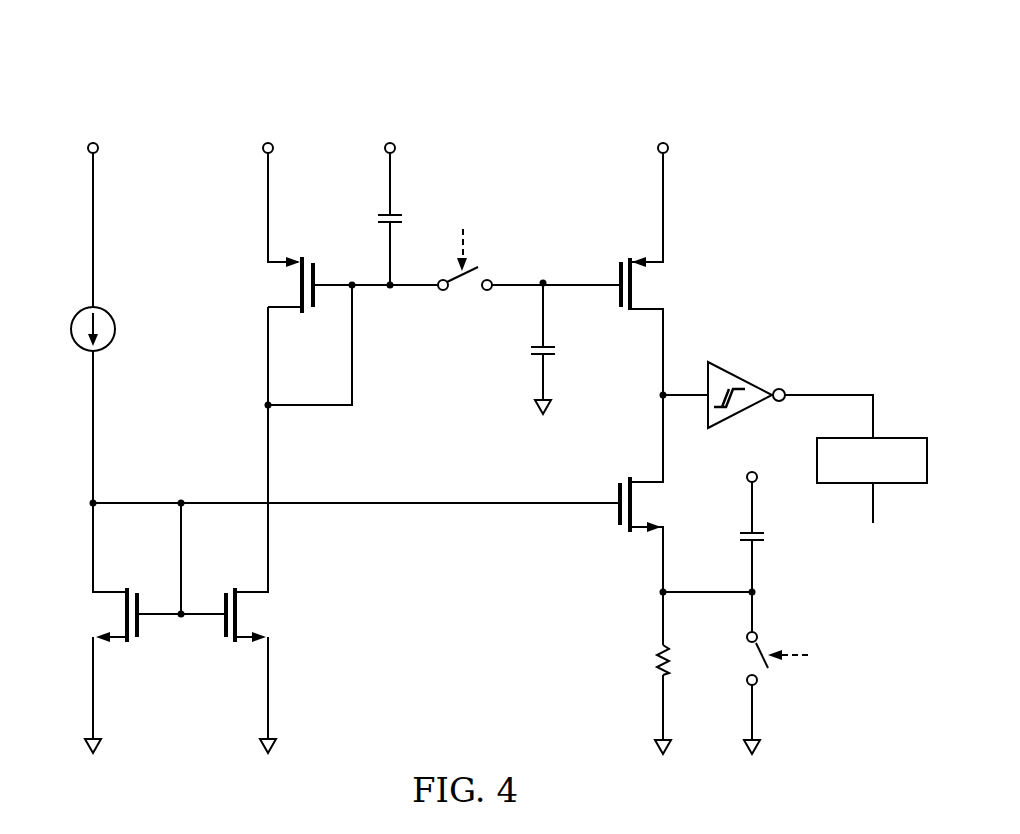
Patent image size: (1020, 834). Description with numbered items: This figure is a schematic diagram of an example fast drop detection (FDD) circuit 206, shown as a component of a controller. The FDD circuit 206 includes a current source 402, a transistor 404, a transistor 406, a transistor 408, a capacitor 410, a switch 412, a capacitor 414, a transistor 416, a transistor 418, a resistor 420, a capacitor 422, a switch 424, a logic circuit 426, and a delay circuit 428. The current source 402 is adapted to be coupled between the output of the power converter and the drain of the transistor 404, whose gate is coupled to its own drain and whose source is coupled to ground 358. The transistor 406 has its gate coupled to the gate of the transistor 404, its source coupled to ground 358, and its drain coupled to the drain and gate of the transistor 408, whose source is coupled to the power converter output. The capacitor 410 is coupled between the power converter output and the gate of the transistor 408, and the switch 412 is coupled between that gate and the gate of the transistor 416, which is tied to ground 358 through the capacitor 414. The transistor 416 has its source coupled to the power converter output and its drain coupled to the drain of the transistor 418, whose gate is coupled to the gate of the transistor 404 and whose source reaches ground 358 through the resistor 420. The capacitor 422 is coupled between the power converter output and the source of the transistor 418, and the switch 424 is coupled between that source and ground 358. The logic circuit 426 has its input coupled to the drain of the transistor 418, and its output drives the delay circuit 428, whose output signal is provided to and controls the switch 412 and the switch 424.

The FDD circuit 206 is at (356, 85).
The current source 402 is at (116, 327).
The transistor 404 is at (137, 625).
The transistor 406 is at (226, 625).
The transistor 408 is at (321, 309).
The capacitor 410 is at (378, 218).
The switch 412 is at (446, 291).
The capacitor 414 is at (556, 350).
The transistor 416 is at (618, 274).
The transistor 418 is at (618, 512).
The resistor 420 is at (656, 660).
The capacitor 422 is at (766, 540).
The switch 424 is at (747, 647).
The logic circuit 426 is at (744, 387).
The delay circuit 428 is at (905, 438).
The ground 358 is at (104, 748).